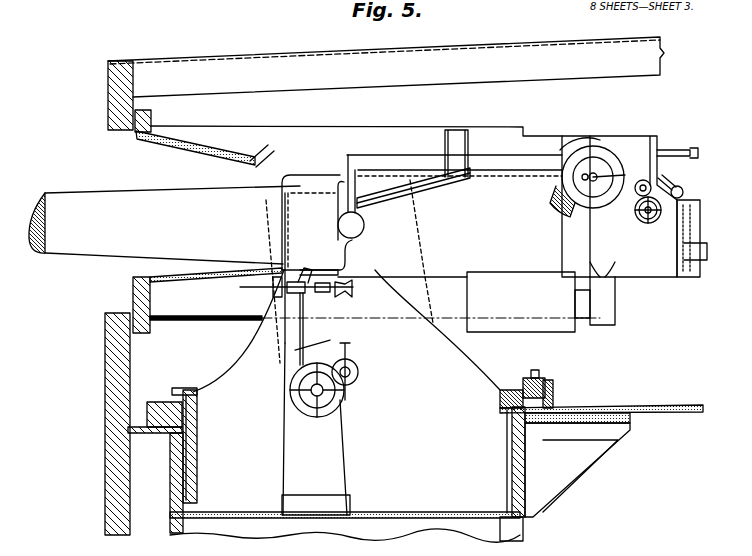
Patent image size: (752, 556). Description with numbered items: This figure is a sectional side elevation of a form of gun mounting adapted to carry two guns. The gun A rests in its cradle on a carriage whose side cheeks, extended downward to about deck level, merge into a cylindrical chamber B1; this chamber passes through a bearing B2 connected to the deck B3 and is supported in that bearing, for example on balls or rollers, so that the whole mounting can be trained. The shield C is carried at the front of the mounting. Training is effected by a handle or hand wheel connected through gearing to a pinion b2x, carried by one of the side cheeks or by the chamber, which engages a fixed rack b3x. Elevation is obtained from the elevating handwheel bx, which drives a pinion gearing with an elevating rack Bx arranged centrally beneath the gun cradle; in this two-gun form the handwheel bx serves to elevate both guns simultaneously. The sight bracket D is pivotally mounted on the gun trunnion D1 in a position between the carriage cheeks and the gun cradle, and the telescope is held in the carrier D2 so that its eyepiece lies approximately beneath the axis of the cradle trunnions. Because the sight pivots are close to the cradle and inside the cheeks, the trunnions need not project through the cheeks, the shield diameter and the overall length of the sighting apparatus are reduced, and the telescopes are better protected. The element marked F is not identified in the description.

The gun A is at (164, 225).
The shield C is at (133, 296).
The sight bracket D is at (413, 192).
The gun trunnion D1 is at (350, 223).
The carrier D2 is at (334, 270).
The elevating rack Bx is at (296, 316).
The elevating handwheel bx is at (333, 367).
The pedestal F is at (356, 349).
The cylindrical chamber B1 is at (196, 447).
The bearing B2 is at (584, 483).
The deck B3 is at (583, 397).
The pinion b2x is at (428, 512).
The fixed rack b3x is at (545, 392).